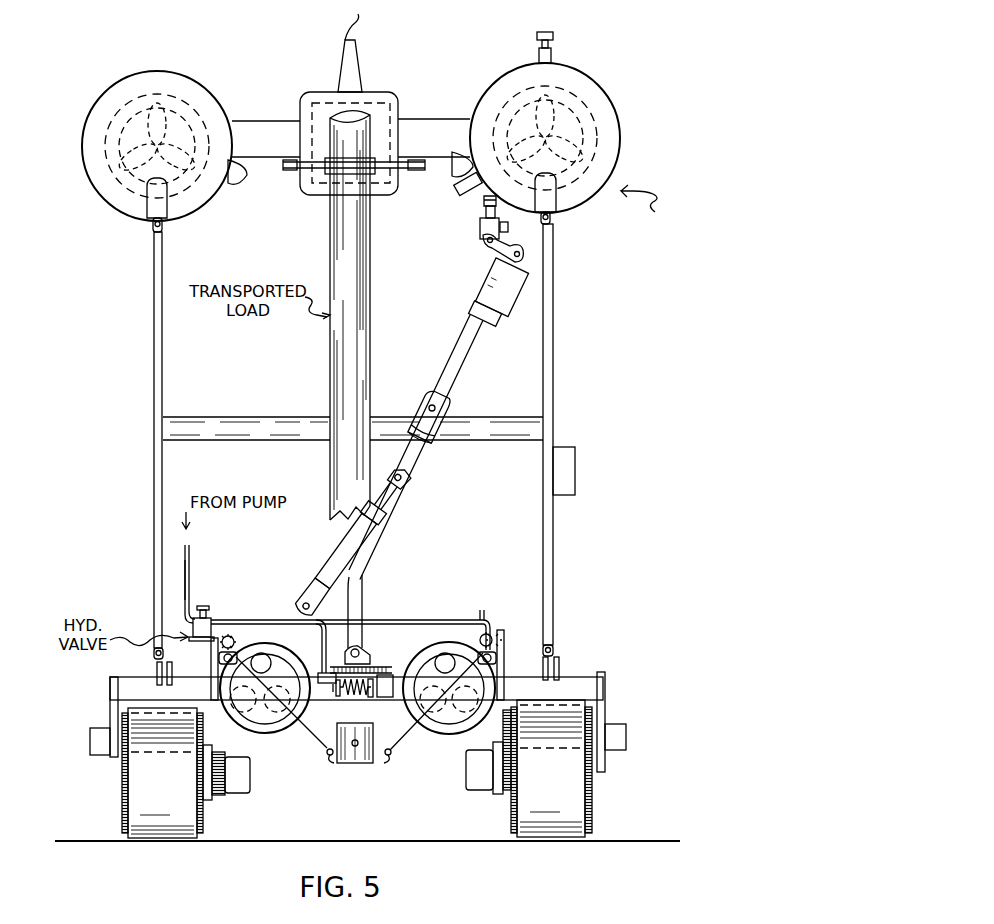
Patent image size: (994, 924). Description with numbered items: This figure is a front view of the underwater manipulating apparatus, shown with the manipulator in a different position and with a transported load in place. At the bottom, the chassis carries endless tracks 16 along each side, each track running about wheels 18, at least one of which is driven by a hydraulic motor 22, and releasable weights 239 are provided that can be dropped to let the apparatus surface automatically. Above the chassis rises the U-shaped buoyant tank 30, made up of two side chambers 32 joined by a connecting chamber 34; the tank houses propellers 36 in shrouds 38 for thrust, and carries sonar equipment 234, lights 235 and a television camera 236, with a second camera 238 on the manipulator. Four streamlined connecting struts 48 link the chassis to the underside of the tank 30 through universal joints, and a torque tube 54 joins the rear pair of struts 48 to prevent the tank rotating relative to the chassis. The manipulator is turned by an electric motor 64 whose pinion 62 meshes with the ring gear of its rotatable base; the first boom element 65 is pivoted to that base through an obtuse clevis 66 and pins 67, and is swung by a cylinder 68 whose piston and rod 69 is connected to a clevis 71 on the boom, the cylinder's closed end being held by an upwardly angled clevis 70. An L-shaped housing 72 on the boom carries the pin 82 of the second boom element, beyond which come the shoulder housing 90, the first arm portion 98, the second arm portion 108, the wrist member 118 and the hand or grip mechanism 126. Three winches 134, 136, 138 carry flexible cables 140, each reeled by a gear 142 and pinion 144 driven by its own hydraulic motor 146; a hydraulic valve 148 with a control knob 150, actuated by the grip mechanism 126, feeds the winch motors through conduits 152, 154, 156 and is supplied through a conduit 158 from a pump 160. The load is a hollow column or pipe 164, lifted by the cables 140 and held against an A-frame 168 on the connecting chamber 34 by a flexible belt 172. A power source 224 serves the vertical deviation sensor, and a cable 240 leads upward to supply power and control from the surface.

The endless track 16 is at (150, 800).
The wheel 18 is at (203, 815).
The hydraulic motor 22 is at (240, 777).
The buoyant tank 30 is at (647, 201).
The side chamber 32 is at (96, 195).
The connecting chamber 34 is at (268, 138).
The propeller 36 is at (598, 132).
The shroud 38 is at (605, 165).
The connecting strut 48 is at (163, 275).
The torque tube 54 is at (276, 428).
The pinion 62 is at (388, 675).
The electric motor 64 is at (388, 700).
The first boom element 65 is at (432, 474).
The obtuse clevis 66 is at (366, 606).
The pin 67 is at (368, 655).
The cylinder 68 is at (333, 573).
The piston and rod 69 is at (404, 500).
The clevis 70 is at (318, 608).
The clevis 71 is at (415, 489).
The L-shaped housing 72 is at (457, 417).
The pin 82 is at (430, 405).
The shoulder housing 90 is at (503, 290).
The first arm portion 98 is at (494, 248).
The second arm portion 108 is at (481, 231).
The wrist member 118 is at (486, 214).
The hand or grip mechanism 126 is at (484, 203).
The winch 134 is at (280, 656).
The winch 136 is at (355, 698).
The winch 138 is at (461, 653).
The flexible cable 140 is at (297, 716).
The gear 142 is at (504, 650).
The pinion 144 is at (492, 638).
The hydraulic motor 146 is at (490, 652).
The hydraulic valve 148 is at (193, 622).
The control knob 150 is at (205, 605).
The conduit 152 is at (157, 668).
The conduit 154 is at (380, 619).
The conduit 156 is at (479, 620).
The conduit 158 is at (191, 570).
The pump 160 is at (200, 548).
The column or pipe 164 is at (368, 331).
The A-frame 168 is at (303, 188).
The flexible belt 172 is at (345, 172).
The power source 224 is at (576, 465).
The sonar equipment 234 is at (540, 50).
The light 235 is at (236, 184).
The television camera 236 is at (458, 189).
The television camera 238 is at (508, 228).
The releasable weight 239 is at (95, 742).
The cable 240 is at (360, 22).